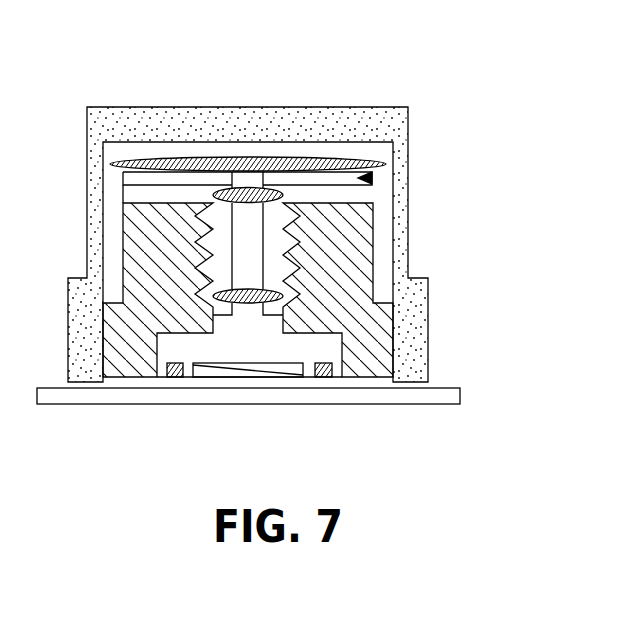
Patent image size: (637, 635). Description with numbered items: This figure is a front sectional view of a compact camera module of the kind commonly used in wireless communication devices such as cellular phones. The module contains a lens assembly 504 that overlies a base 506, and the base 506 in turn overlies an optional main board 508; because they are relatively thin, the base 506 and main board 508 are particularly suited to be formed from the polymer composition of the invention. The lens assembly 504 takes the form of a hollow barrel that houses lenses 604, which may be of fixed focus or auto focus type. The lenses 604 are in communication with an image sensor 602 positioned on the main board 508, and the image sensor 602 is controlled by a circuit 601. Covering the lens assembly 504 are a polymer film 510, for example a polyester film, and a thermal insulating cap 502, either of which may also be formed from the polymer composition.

The thermal insulating cap 502 is at (376, 120).
The lens assembly 504 is at (374, 178).
The base 506 is at (340, 262).
The main board 508 is at (360, 386).
The polymer film 510 is at (272, 156).
The circuit 601 is at (320, 379).
The image sensor 602 is at (241, 378).
The lenses 604 is at (250, 189).